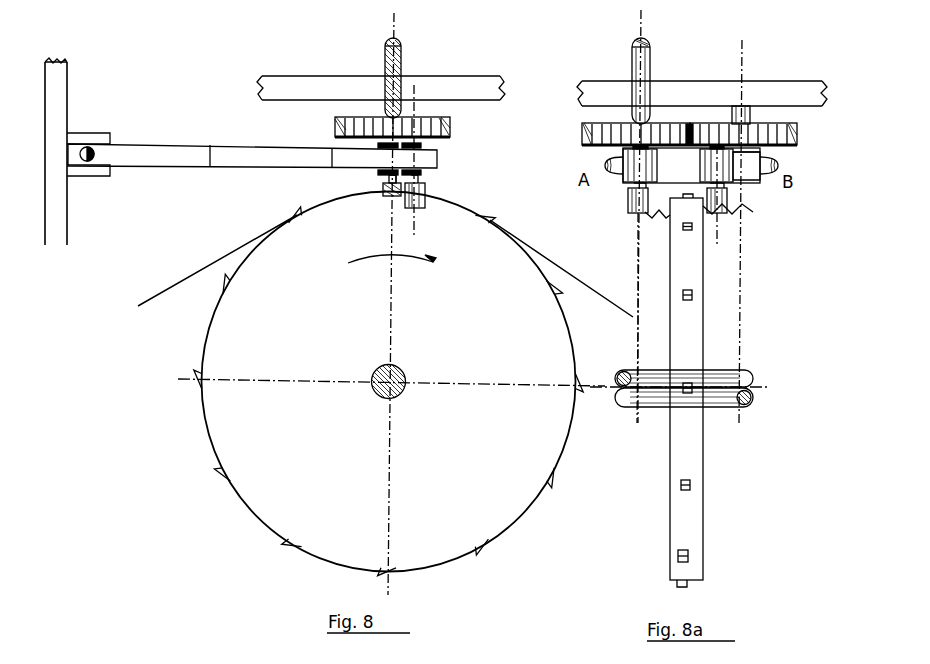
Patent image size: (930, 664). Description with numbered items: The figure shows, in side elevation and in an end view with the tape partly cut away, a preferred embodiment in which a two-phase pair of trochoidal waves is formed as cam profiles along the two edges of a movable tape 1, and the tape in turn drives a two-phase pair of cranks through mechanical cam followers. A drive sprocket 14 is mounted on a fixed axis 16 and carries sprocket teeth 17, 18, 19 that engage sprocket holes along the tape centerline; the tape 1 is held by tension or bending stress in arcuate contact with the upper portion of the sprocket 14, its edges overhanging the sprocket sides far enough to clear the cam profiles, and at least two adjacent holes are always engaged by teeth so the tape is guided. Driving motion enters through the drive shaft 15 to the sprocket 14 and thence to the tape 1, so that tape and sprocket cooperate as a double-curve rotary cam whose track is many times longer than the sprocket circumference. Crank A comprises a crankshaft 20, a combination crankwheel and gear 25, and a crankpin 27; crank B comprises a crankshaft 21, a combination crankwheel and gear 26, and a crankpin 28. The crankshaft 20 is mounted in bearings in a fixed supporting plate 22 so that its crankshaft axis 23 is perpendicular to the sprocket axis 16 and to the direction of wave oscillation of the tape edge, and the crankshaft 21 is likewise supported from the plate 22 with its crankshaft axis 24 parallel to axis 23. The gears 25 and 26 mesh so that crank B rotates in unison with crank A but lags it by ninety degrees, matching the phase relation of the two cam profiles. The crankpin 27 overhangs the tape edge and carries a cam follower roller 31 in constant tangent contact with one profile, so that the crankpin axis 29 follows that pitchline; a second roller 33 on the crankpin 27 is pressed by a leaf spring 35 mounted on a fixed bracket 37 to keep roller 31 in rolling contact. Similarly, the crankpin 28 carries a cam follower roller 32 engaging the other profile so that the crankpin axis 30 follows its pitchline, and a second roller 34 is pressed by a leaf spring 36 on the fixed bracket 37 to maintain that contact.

In FIG. 8, the movable tape 1 is at (183, 289).
In FIG. 8A, the movable tape 1 is at (753, 214).
In FIG. 8, the drive sprocket 14 is at (203, 425).
In FIG. 8A, the drive sprocket 14 is at (670, 498).
In FIG. 8, the drive shaft 15 is at (373, 389).
In FIG. 8A, the drive shaft 15 is at (755, 408).
In FIG. 8A, the fixed axis 16 is at (764, 389).
In FIG. 8, the sprocket tooth 17 is at (296, 215).
In FIG. 8, the sprocket tooth 18 is at (389, 196).
In FIG. 8, the sprocket tooth 19 is at (493, 218).
In FIG. 8, the crankshaft 20 is at (403, 57).
In FIG. 8A, the crankshaft 20 is at (651, 58).
In FIG. 8A, the crankshaft 21 is at (751, 117).
In FIG. 8, the fixed supporting plate 22 is at (277, 74).
In FIG. 8A, the fixed supporting plate 22 is at (598, 80).
In FIG. 8, the crankshaft axis 23 is at (397, 25).
In FIG. 8A, the crankshaft axis 23 is at (643, 25).
In FIG. 8A, the crankshaft axis 24 is at (743, 62).
In FIG. 8, the combination crankwheel and gear 25 is at (451, 128).
In FIG. 8A, the combination crankwheel and gear 25 is at (583, 130).
In FIG. 8A, the combination crankwheel and gear 26 is at (798, 133).
In FIG. 8, the crankpin 27 is at (421, 173).
In FIG. 8, the crankpin 28 is at (378, 173).
In FIG. 8, the crankpin axis 29 is at (418, 223).
In FIG. 8A, the crankpin axis 29 is at (636, 232).
In FIG. 8A, the crankpin axis 30 is at (718, 235).
In FIG. 8, the cam follower roller 31 is at (426, 190).
In FIG. 8A, the cam follower roller 31 is at (628, 202).
In FIG. 8, the cam follower roller 32 is at (383, 188).
In FIG. 8A, the cam follower roller 32 is at (728, 198).
In FIG. 8, the second roller 33 is at (430, 147).
In FIG. 8A, the second roller 33 is at (626, 183).
In FIG. 8, the second roller 34 is at (378, 146).
In FIG. 8A, the second roller 34 is at (735, 182).
In FIG. 8, the leaf spring 35 is at (166, 146).
In FIG. 8A, the leaf spring 35 is at (606, 160).
In FIG. 8A, the leaf spring 36 is at (762, 162).
In FIG. 8, the fixed bracket 37 is at (90, 134).